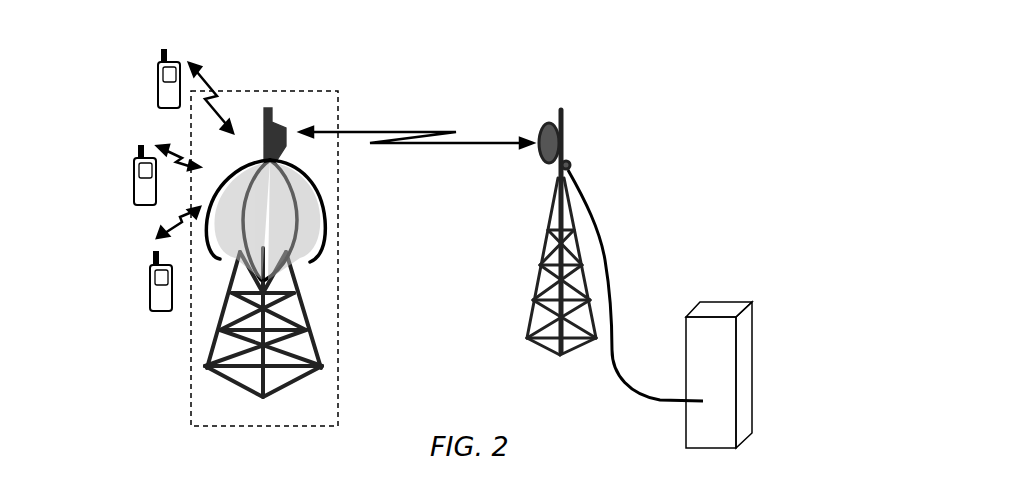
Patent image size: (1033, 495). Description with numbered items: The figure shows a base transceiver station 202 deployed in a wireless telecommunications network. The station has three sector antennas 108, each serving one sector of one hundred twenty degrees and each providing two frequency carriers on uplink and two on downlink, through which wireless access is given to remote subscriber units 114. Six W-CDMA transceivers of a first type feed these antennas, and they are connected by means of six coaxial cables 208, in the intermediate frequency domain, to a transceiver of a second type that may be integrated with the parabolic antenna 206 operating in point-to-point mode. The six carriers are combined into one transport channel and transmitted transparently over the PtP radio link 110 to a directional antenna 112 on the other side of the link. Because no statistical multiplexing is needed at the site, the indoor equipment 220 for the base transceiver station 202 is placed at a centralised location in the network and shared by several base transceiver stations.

The sector antenna 108 is at (332, 187).
The PtP radio link 110 is at (416, 124).
The directional antenna 112 is at (616, 252).
The remote subscriber unit 114 is at (146, 180).
The base transceiver station 202 is at (225, 258).
The parabolic antenna 206 is at (362, 161).
The coaxial cable 208 is at (331, 236).
The indoor equipment 220 is at (768, 375).